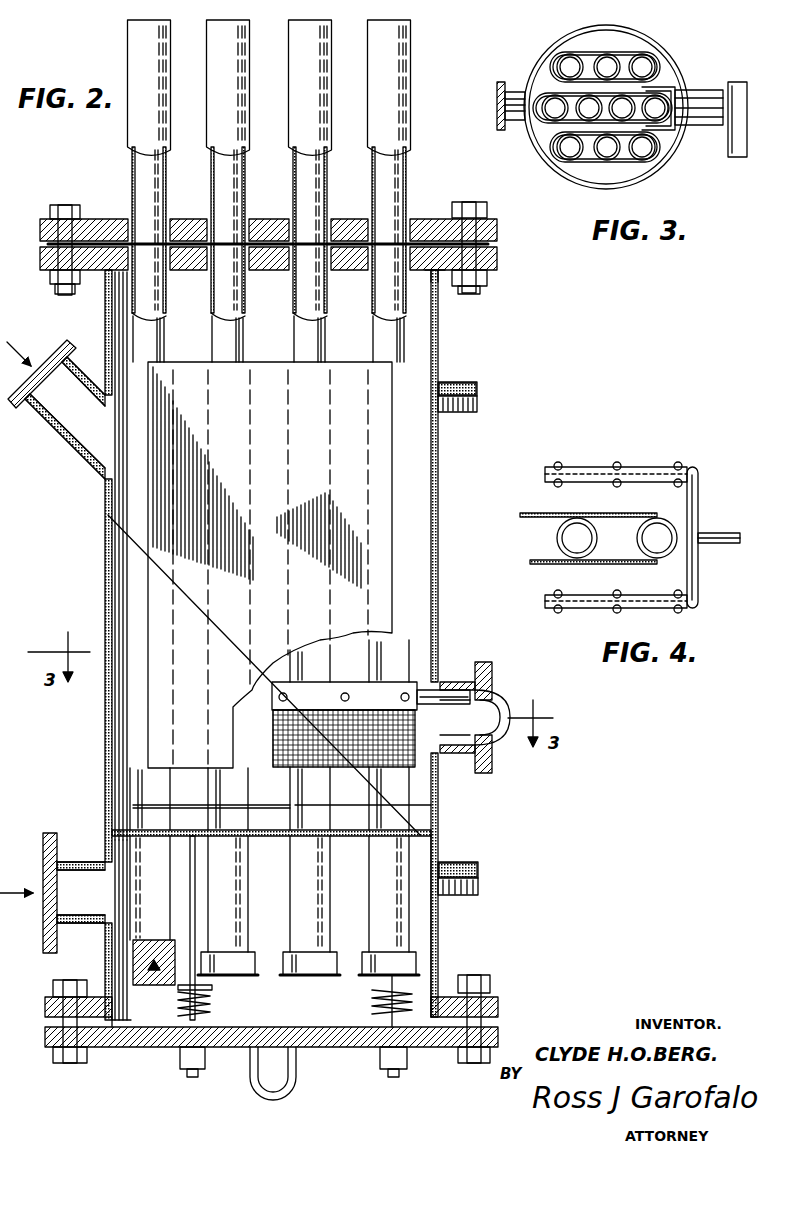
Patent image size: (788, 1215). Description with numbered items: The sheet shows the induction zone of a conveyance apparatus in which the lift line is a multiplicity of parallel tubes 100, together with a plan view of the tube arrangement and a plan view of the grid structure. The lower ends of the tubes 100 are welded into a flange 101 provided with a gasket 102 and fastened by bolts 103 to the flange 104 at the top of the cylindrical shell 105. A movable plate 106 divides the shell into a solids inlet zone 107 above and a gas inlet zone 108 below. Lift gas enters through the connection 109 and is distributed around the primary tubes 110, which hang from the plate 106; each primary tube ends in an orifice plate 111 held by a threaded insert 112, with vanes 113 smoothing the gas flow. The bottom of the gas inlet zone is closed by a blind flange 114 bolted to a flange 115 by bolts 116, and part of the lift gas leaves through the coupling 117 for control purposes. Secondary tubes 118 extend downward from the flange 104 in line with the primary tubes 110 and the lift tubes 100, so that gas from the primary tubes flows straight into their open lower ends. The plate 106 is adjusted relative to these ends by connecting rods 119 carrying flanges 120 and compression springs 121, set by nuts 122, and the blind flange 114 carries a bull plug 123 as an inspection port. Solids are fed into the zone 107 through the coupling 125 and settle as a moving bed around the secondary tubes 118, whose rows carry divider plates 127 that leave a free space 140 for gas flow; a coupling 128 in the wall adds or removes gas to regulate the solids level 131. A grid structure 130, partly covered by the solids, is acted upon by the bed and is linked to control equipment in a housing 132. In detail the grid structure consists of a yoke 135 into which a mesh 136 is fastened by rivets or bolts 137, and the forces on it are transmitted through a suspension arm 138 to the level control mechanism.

In FIG. 2, the parallel tubes 100 is at (386, 21).
In FIG. 2, the flange 101 is at (425, 219).
In FIG. 2, the gasket 102 is at (445, 245).
In FIG. 2, the bolts 103 is at (64, 214).
In FIG. 2, the flange 104 is at (440, 274).
In FIG. 2, the cylindrical shell 105 is at (436, 624).
In FIG. 3, the cylindrical shell 105 is at (650, 42).
In FIG. 2, the movable plate 106 is at (440, 840).
In FIG. 2, the solids inlet zone 107 is at (135, 604).
In FIG. 2, the gas inlet zone 108 is at (428, 945).
In FIG. 2, the connection 109 is at (102, 838).
In FIG. 3, the connection 109 is at (513, 93).
In FIG. 2, the primary tubes 110 is at (312, 977).
In FIG. 2, the orifice plate 111 is at (152, 986).
In FIG. 2, the threaded insert 112 is at (120, 1022).
In FIG. 2, the vanes 113 is at (145, 905).
In FIG. 2, the blind flange 114 is at (428, 1050).
In FIG. 2, the flange 115 is at (499, 1006).
In FIG. 2, the bolts 116 is at (73, 1065).
In FIG. 2, the coupling 117 is at (480, 878).
In FIG. 2, the secondary tubes 118 is at (375, 799).
In FIG. 3, the secondary tubes 118 is at (650, 155).
In FIG. 4, the secondary tubes 118 is at (597, 538).
In FIG. 2, the connecting rods 119 is at (196, 912).
In FIG. 2, the flanges 120 is at (206, 990).
In FIG. 2, the compression springs 121 is at (207, 1010).
In FIG. 2, the nuts 122 is at (190, 1078).
In FIG. 2, the bull plug 123 is at (297, 1093).
In FIG. 2, the coupling 125 is at (52, 424).
In FIG. 3, the divider plates 127 is at (552, 122).
In FIG. 4, the divider plates 127 is at (549, 494).
In FIG. 2, the coupling 128 is at (447, 384).
In FIG. 2, the grid structure 130 is at (418, 688).
In FIG. 3, the grid structure 130 is at (666, 88).
In FIG. 4, the grid structure 130 is at (696, 516).
In FIG. 2, the solids level 131 is at (228, 632).
In FIG. 2, the housing 132 is at (506, 696).
In FIG. 3, the housing 132 is at (745, 100).
In FIG. 4, the yoke 135 is at (657, 467).
In FIG. 4, the mesh 136 is at (606, 467).
In FIG. 4, the rivets or bolts 137 is at (559, 466).
In FIG. 4, the suspension arm 138 is at (722, 548).
In FIG. 3, the free space 140 is at (630, 155).